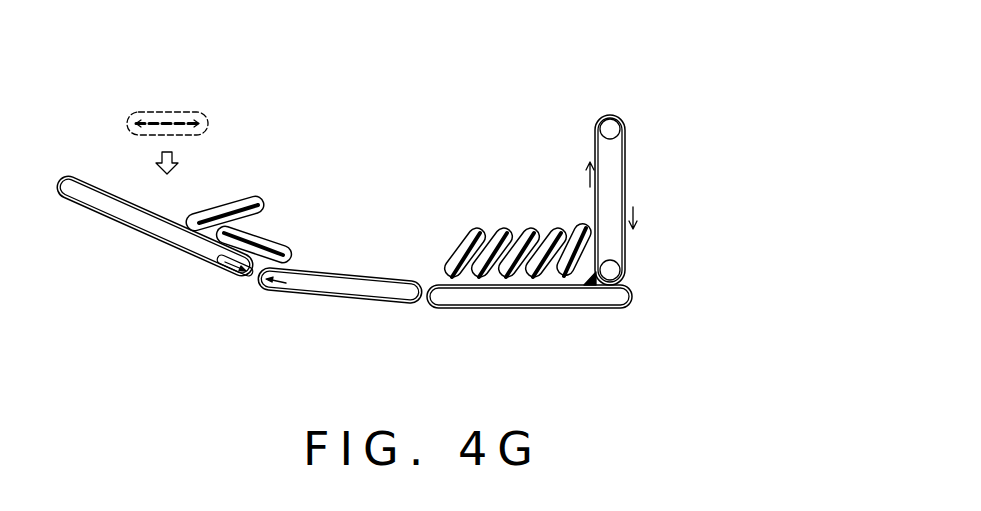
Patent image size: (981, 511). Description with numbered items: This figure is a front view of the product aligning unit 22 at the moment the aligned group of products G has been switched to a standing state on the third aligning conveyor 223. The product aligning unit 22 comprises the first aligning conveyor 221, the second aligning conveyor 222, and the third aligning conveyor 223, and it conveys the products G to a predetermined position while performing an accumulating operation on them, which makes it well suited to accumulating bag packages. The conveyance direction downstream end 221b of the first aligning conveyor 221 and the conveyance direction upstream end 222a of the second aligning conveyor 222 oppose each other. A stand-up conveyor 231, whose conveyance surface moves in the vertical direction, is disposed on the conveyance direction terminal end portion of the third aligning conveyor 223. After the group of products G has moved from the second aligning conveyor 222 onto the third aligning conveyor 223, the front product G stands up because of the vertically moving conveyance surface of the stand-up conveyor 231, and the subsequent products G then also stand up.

The product aligning unit 22 is at (582, 60).
The first aligning conveyor 221 is at (148, 239).
The conveyance direction downstream end 221b is at (223, 271).
The second aligning conveyor 222 is at (370, 303).
The conveyance direction upstream end 222a is at (292, 294).
The third aligning conveyor 223 is at (535, 310).
The stand-up conveyor 231 is at (665, 149).
The product G is at (270, 247).